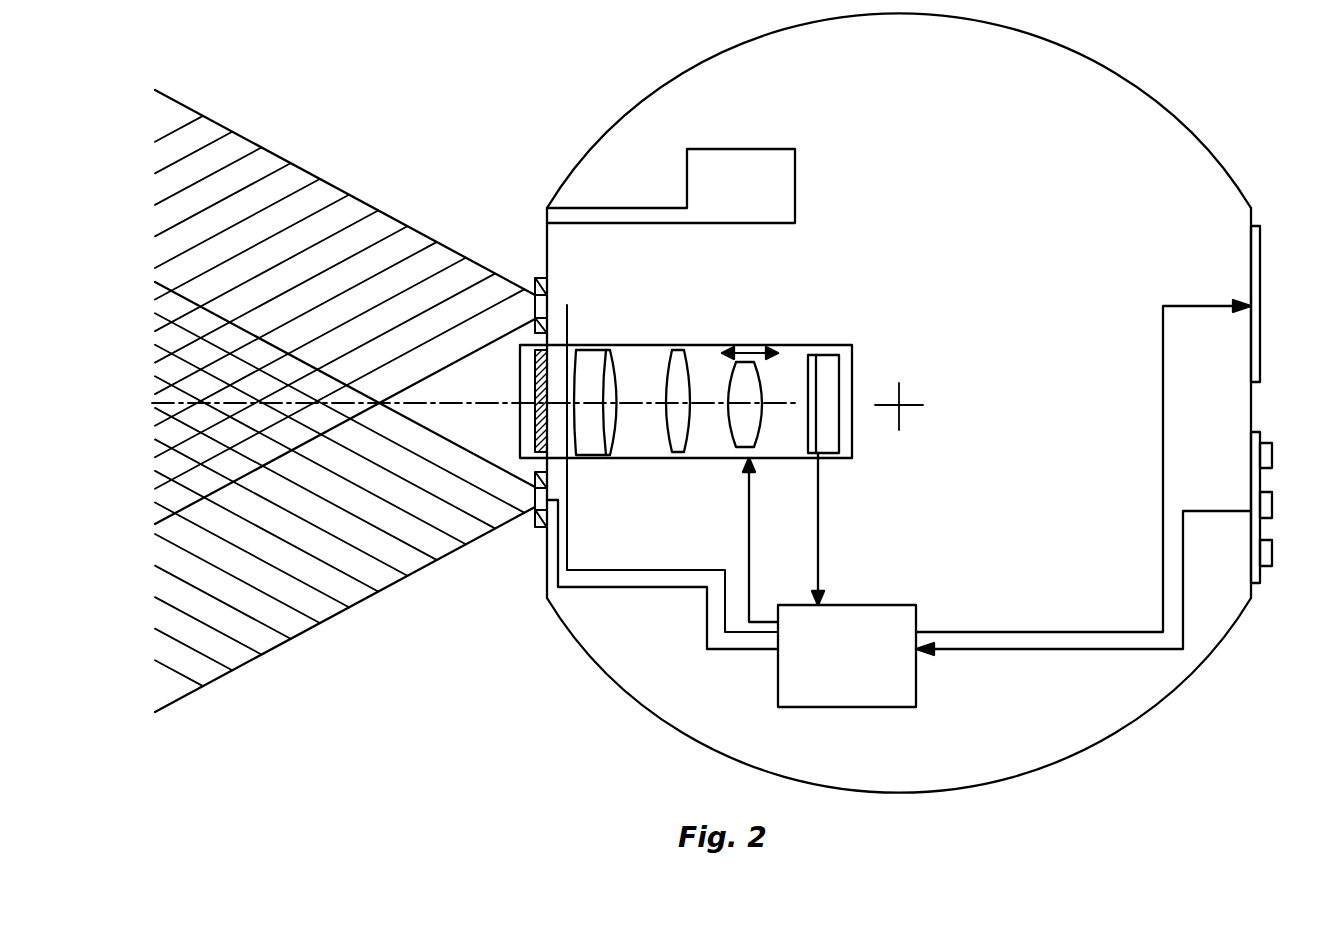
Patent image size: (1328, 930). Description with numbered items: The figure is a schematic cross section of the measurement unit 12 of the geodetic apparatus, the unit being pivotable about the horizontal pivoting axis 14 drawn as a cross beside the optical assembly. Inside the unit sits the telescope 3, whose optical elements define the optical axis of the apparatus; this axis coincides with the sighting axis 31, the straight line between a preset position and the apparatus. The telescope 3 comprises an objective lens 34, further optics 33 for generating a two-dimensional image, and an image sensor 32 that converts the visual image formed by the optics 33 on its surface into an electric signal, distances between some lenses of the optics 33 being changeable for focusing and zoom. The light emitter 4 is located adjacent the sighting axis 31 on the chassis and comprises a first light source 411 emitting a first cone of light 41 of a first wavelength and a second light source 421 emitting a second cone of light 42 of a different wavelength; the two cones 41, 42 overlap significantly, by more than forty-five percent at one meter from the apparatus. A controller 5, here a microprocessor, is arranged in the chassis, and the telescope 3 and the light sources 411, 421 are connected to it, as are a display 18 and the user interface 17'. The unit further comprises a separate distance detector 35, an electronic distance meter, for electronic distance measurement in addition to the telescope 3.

The measurement unit 12 is at (1168, 107).
The distance detector 35 is at (796, 174).
The first cone of light 41 is at (415, 242).
The second cone of light 42 is at (405, 557).
The sighting axis 31 is at (167, 405).
The light emitter 4 is at (541, 277).
The first light source 411 is at (547, 298).
The second light source 421 is at (548, 493).
The telescope 3 is at (853, 443).
The objective lens 34 is at (575, 358).
The optics 33 is at (583, 337).
The image sensor 32 is at (828, 367).
The horizontal pivoting axis 14 is at (900, 405).
The controller 5 is at (857, 668).
The display 18 is at (1262, 306).
The user interface 17' is at (1121, 543).